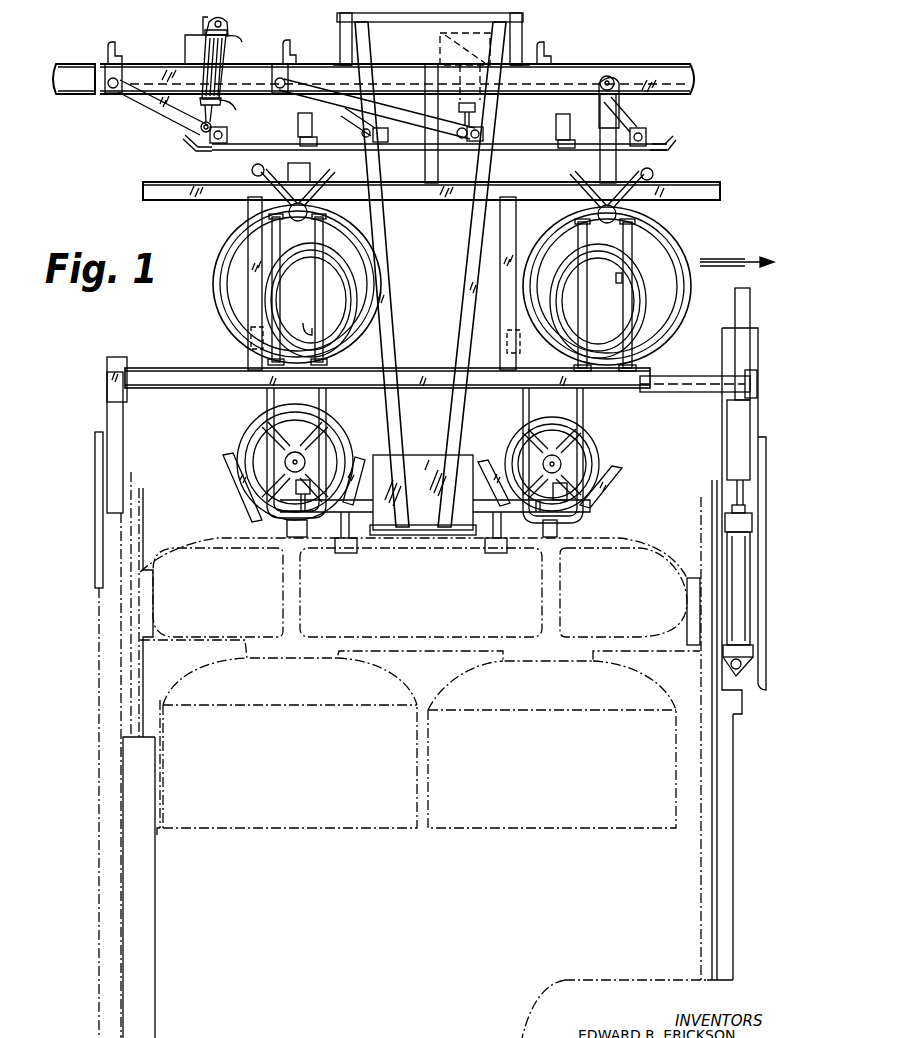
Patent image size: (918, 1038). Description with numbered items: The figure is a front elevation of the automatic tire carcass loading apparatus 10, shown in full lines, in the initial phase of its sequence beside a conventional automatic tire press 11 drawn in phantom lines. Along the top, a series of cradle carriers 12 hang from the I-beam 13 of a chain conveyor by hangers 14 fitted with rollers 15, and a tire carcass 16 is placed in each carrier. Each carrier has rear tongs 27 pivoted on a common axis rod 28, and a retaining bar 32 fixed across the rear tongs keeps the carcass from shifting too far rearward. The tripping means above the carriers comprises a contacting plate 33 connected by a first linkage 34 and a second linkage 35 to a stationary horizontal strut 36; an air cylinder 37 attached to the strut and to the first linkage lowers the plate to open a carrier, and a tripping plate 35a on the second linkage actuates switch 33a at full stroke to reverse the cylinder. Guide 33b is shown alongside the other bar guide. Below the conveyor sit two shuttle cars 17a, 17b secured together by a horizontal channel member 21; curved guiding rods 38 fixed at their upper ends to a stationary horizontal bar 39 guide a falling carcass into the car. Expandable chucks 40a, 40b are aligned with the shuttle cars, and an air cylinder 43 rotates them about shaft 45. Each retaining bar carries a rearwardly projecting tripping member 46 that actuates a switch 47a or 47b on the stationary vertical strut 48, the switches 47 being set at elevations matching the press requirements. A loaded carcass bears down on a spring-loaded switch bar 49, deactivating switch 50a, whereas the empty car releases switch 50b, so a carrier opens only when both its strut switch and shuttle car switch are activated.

The automatic tire carcass loading apparatus 10 is at (170, 345).
The automatic tire press 11 is at (92, 804).
The cradle carrier 12 is at (222, 240).
The I-beam 13 is at (676, 76).
The hanger 14 is at (618, 170).
The roller 15 is at (611, 76).
The tire carcass 16 is at (243, 297).
The first shuttle car 17a is at (242, 480).
The second shuttle car 17b is at (615, 480).
The horizontal channel member 21 is at (595, 534).
The rear tongs 27 is at (362, 240).
The common axis rod 28 is at (310, 208).
The retaining bar 32 is at (316, 266).
The contacting plate 33 is at (233, 150).
The switch 33a is at (297, 125).
The right bar guide 33b is at (557, 126).
The first linkage 34 is at (152, 103).
The second linkage 35 is at (352, 114).
The tripping plate 35a is at (312, 152).
The stationary horizontal strut 36 is at (247, 77).
The air cylinder 37 is at (222, 54).
The curved guiding rods 38 is at (326, 402).
The stationary horizontal bar 39 is at (232, 373).
The expandable chuck 40a is at (306, 444).
The expandable chuck 40b is at (564, 446).
The air cylinder 43 is at (748, 546).
The shaft 45 is at (684, 386).
The tripping member 46 is at (616, 280).
The switch 47 is at (298, 322).
The switch 47a is at (250, 342).
The switch 47b is at (507, 342).
The stationary vertical strut 48 is at (253, 210).
The spring-loaded pressure-responsive switch bar 49 is at (290, 536).
The switch 50a is at (305, 498).
The switch 50b is at (567, 494).